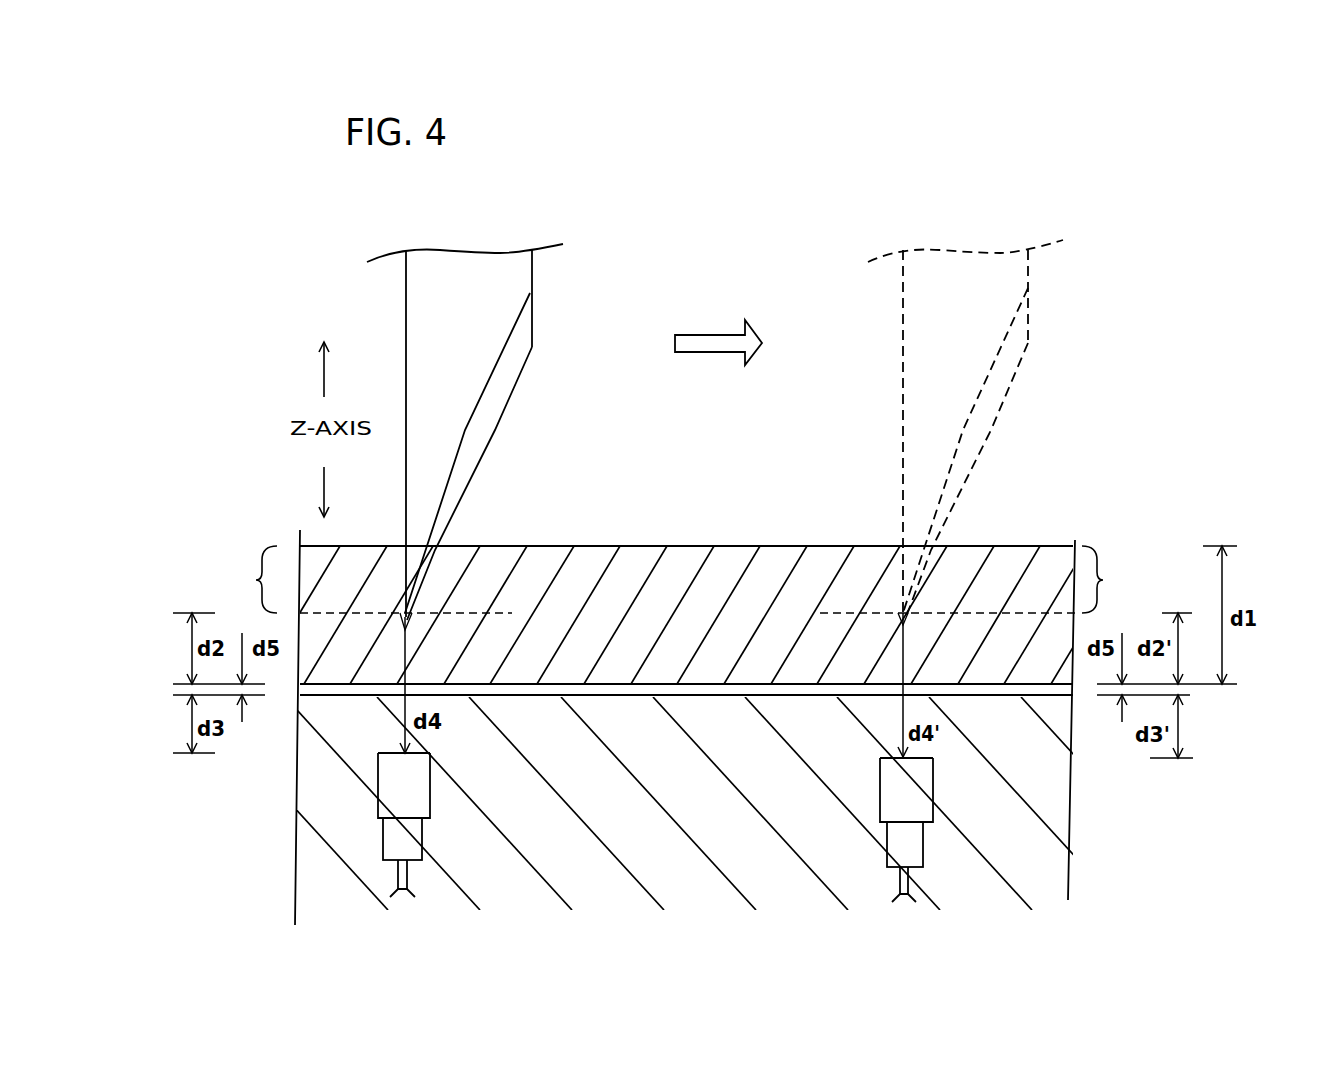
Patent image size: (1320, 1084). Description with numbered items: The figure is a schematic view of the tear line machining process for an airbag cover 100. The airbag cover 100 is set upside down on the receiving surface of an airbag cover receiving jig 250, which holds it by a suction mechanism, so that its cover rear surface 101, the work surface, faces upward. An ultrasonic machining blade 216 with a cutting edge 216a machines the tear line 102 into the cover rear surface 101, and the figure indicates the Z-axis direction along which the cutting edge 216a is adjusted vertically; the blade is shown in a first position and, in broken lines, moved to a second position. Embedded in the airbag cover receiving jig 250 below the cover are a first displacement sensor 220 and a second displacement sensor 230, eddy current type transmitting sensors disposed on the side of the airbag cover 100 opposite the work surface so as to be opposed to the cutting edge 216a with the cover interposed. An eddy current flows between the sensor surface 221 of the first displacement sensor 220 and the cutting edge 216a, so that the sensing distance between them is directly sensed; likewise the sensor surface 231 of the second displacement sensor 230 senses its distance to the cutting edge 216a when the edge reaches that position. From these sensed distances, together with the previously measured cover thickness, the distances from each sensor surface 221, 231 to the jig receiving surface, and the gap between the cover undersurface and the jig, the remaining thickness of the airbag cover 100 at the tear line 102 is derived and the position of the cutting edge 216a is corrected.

The airbag cover 100 is at (567, 537).
The cover rear surface 101 is at (1022, 545).
The tear line 102 is at (680, 579).
The ultrasonic machining blade 216 is at (495, 292).
The cutting edge 216a is at (408, 618).
The first displacement sensor 220 is at (378, 812).
The sensor surface 221 is at (413, 745).
The second displacement sensor 230 is at (878, 808).
The sensor surface 231 is at (923, 755).
The airbag cover receiving jig 250 is at (308, 775).